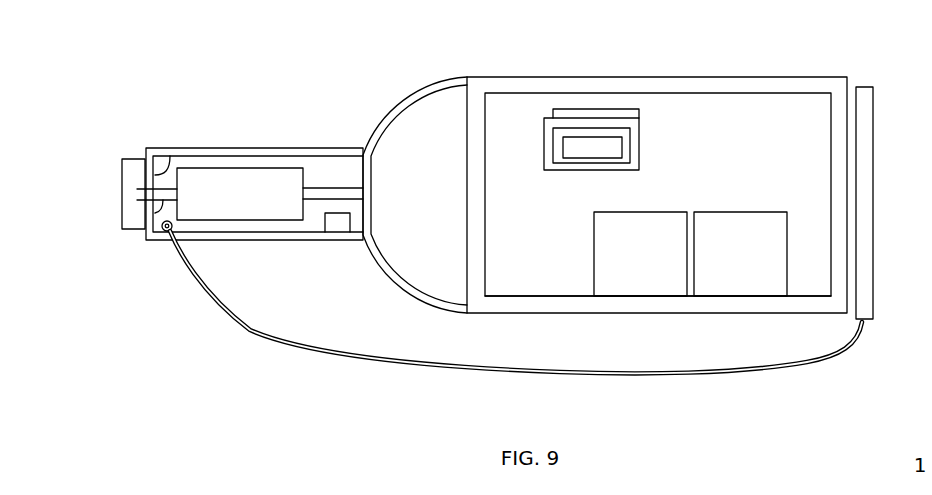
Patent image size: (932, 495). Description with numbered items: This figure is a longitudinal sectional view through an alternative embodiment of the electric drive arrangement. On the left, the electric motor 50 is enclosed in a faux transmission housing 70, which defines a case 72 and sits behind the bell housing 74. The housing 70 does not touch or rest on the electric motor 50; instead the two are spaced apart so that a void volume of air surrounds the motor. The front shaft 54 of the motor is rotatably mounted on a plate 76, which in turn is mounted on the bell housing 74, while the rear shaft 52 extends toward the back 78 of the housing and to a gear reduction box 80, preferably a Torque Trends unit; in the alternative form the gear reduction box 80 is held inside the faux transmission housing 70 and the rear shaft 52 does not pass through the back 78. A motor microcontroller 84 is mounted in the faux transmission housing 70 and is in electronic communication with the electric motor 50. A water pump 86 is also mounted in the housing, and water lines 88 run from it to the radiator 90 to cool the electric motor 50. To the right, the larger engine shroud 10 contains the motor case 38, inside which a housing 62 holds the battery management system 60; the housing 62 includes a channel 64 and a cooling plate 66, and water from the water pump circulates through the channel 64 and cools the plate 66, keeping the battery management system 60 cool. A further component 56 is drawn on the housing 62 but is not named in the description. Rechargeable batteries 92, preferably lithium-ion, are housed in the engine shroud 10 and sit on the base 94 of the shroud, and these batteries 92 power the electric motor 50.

The engine shroud 10 is at (848, 76).
The motor case 38 is at (792, 108).
The electric motor 50 is at (229, 178).
The rear shaft 52 is at (153, 212).
The front shaft 54 is at (346, 192).
The sensor housing 56 is at (545, 146).
The battery management system 60 is at (583, 93).
The housing 62 is at (557, 85).
The channel 64 is at (630, 147).
The cooling plate 66 is at (620, 117).
The faux transmission housing 70 is at (286, 152).
The case 72 is at (322, 170).
The bell housing 74 is at (417, 99).
The plate 76 is at (368, 186).
The back 78 is at (170, 156).
The gear reduction box 80 is at (133, 172).
The motor microcontroller 84 is at (335, 225).
The water pump 86 is at (165, 233).
The water lines 88 is at (292, 343).
The radiator 90 is at (866, 265).
The rechargeable batteries 92 is at (725, 262).
The base 94 is at (763, 305).